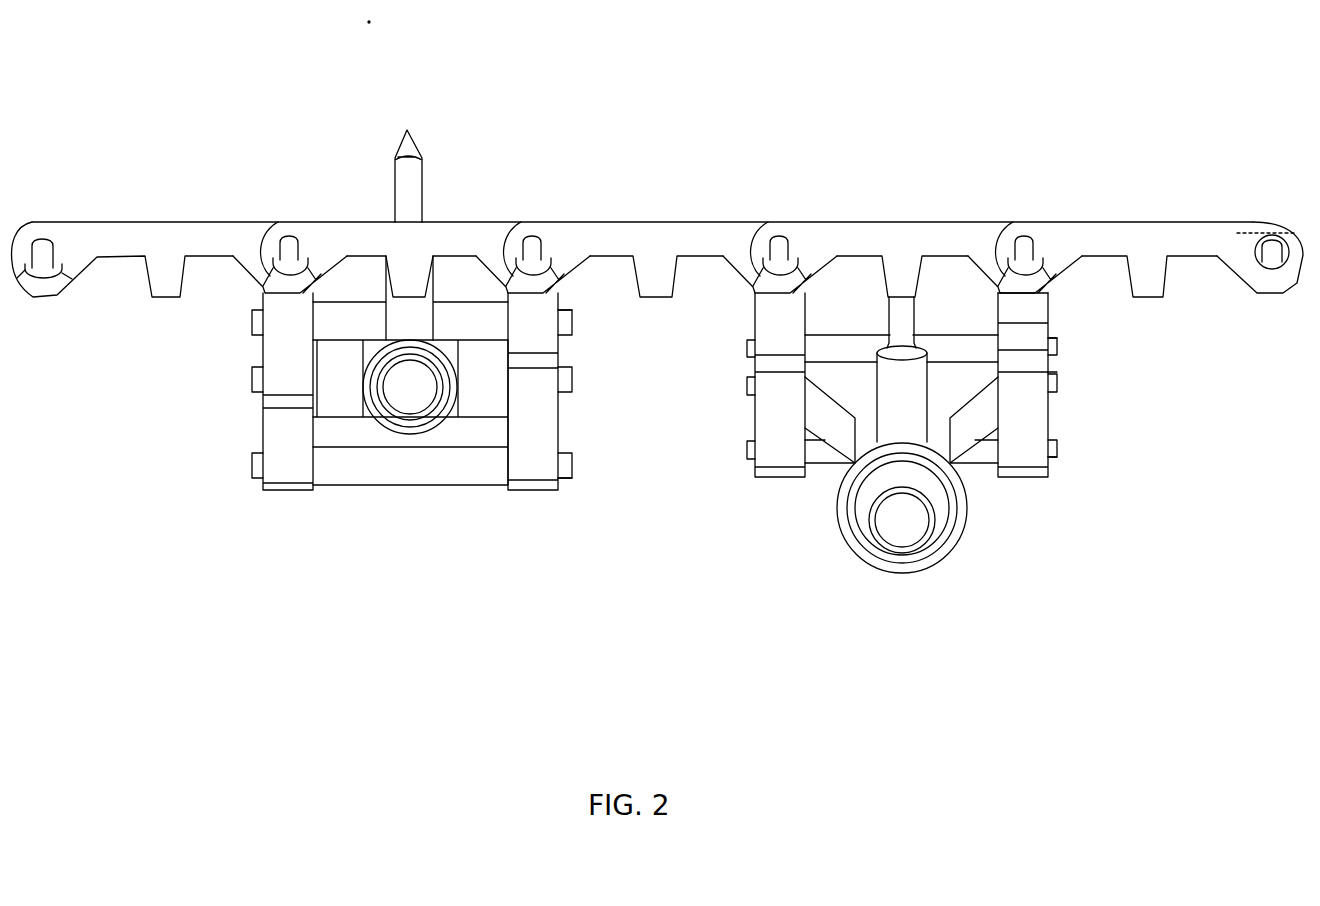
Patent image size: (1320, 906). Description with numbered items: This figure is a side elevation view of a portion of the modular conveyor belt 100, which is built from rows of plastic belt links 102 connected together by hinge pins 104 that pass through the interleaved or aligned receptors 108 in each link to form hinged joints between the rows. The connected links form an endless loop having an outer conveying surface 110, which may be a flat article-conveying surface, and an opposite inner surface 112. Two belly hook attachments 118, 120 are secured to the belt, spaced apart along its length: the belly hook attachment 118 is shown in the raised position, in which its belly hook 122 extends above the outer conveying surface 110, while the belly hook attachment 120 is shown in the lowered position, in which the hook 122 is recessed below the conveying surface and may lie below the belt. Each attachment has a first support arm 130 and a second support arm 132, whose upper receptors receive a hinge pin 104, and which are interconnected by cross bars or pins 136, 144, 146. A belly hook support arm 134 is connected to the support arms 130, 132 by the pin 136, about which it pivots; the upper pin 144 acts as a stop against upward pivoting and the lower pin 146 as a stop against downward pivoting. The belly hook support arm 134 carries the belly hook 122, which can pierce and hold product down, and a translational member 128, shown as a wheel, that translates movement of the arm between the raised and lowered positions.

The modular conveyor belt 100 is at (663, 328).
The belt link 102 is at (180, 238).
The hinge pin 104 is at (287, 252).
The receptor 108 is at (42, 283).
The outer conveying surface 110 is at (618, 194).
The inner surface 112 is at (653, 336).
The belly hook attachment 118 is at (648, 445).
The belly hook attachment 120 is at (1037, 388).
The belly hook 122 is at (415, 177).
The translational member 128 is at (385, 423).
The first support arm 130 is at (273, 425).
The second support arm 132 is at (543, 418).
The belly hook support arm 134 is at (335, 397).
The pin 136 is at (1057, 388).
The upper pin 144 is at (568, 322).
The lower pin 146 is at (572, 462).